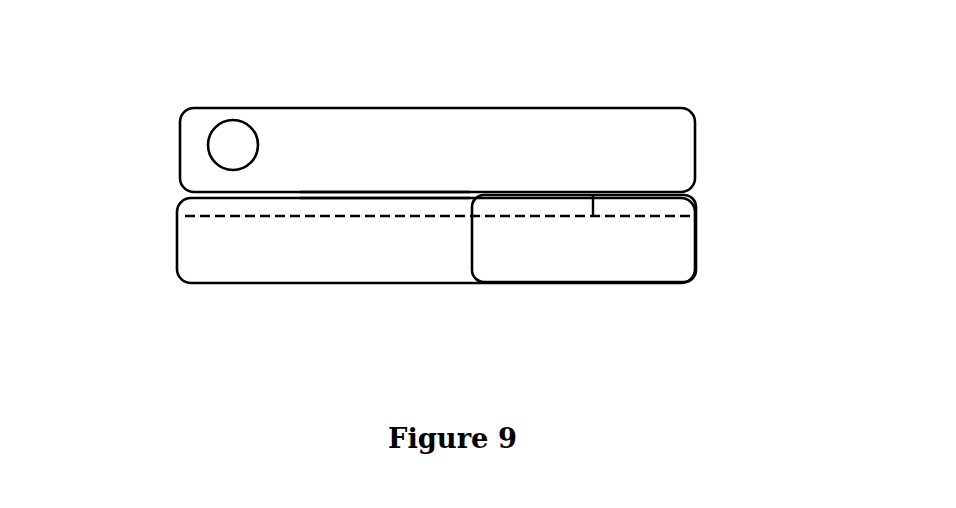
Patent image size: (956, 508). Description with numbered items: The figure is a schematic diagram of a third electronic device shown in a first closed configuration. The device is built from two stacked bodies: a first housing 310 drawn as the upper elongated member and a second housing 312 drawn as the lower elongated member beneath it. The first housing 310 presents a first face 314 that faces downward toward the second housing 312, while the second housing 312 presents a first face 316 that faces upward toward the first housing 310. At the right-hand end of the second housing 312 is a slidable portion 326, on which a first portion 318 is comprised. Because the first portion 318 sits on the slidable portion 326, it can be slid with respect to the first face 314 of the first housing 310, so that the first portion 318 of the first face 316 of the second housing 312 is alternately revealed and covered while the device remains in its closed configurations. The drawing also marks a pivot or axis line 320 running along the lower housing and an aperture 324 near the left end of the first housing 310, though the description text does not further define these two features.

The first housing 310 is at (315, 138).
The second housing 312 is at (315, 272).
The first face of the first housing 314 is at (417, 195).
The first face of the second housing 316 is at (422, 200).
The first portion 318 is at (638, 205).
The pivot axis 320 is at (550, 203).
The aperture 324 is at (227, 143).
The slidable portion 326 is at (578, 235).